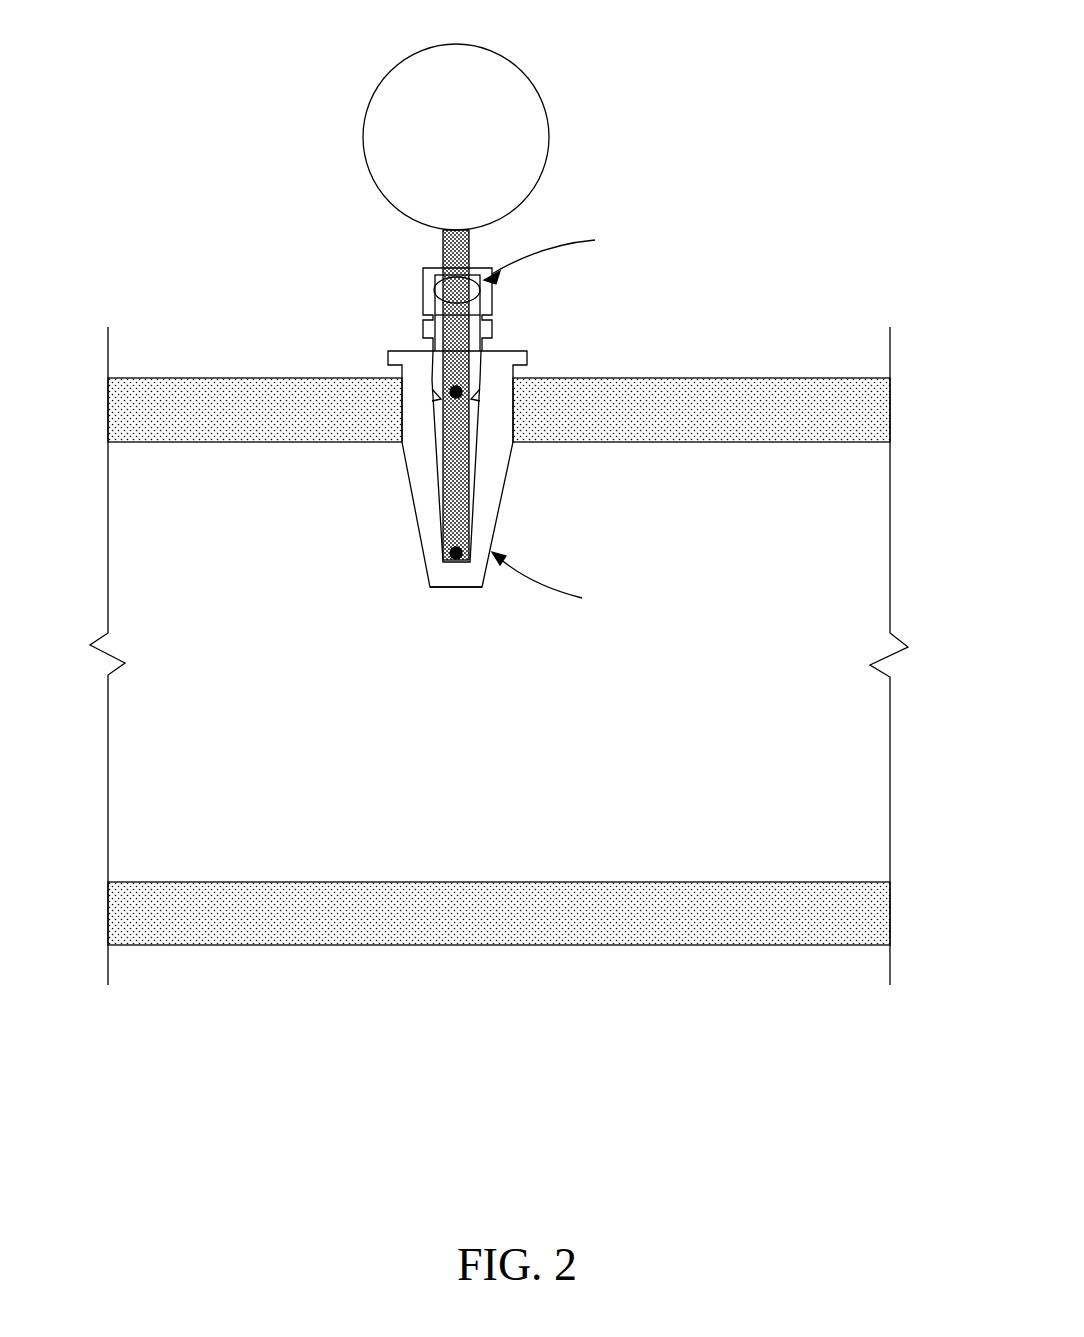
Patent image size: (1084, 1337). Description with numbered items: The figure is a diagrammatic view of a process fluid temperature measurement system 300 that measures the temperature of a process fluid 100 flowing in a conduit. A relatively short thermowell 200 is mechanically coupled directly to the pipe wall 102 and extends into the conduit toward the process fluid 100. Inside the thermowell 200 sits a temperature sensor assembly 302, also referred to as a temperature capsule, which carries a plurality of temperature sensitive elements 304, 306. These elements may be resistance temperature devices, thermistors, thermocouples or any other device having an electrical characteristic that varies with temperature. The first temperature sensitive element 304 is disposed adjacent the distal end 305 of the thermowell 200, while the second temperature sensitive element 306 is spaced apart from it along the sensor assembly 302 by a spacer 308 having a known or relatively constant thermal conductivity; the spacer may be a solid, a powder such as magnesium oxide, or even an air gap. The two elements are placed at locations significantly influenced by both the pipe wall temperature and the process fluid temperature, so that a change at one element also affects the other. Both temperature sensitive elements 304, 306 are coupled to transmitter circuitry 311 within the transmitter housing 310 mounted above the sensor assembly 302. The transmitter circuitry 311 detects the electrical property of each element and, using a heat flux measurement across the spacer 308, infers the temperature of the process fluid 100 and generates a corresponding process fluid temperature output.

The process fluid 100 is at (499, 656).
The pipe wall 102 is at (735, 378).
The thermowell 200 is at (520, 352).
The process fluid temperature measurement system 300 is at (733, 106).
The temperature sensor assembly 302 is at (463, 327).
The temperature sensitive element 304 is at (436, 560).
The distal end 305 is at (448, 590).
The temperature sensitive element 306 is at (442, 416).
The spacer 308 is at (462, 477).
The transmitter housing 310 is at (501, 117).
The transmitter circuitry 311 is at (530, 107).